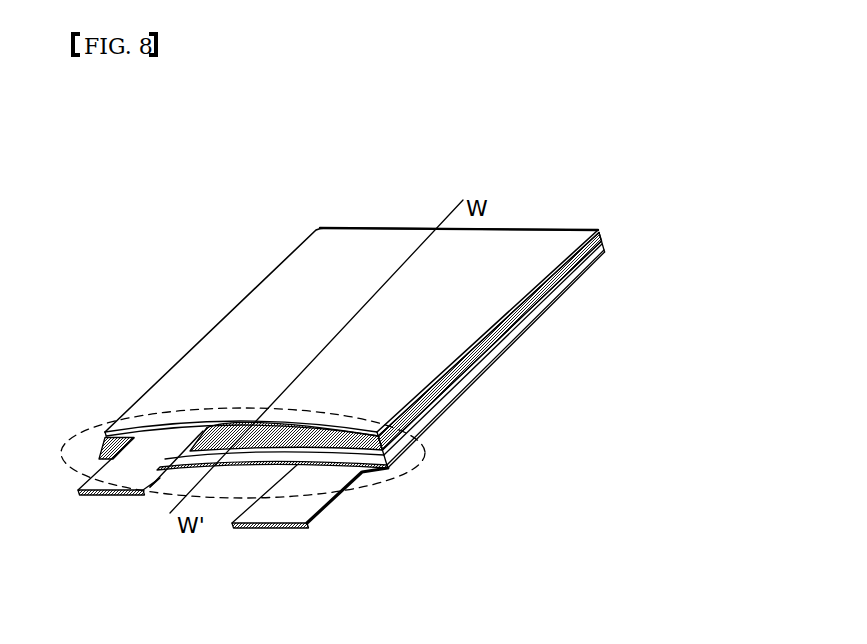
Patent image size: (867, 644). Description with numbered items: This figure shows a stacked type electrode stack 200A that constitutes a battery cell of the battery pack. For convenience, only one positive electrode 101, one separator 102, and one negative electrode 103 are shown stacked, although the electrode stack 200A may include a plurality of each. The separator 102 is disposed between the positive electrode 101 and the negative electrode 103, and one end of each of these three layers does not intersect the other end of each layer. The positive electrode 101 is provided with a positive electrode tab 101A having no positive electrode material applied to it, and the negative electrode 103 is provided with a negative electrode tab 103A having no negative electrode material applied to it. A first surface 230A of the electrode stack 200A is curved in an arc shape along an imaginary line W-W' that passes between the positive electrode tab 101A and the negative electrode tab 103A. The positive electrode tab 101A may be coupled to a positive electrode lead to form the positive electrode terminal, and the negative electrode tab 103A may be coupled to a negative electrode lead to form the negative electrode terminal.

The stacked type electrode stack 200A is at (148, 181).
The positive electrode 101 is at (512, 343).
The separator 102 is at (601, 230).
The negative electrode 103 is at (493, 257).
The positive electrode tab 101A is at (275, 513).
The negative electrode tab 103A is at (120, 481).
The first surface 230A is at (392, 473).